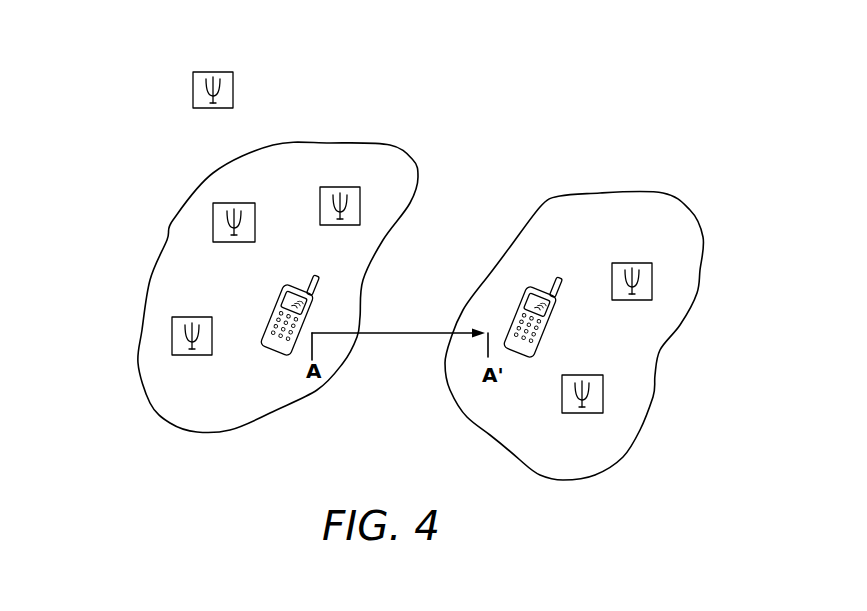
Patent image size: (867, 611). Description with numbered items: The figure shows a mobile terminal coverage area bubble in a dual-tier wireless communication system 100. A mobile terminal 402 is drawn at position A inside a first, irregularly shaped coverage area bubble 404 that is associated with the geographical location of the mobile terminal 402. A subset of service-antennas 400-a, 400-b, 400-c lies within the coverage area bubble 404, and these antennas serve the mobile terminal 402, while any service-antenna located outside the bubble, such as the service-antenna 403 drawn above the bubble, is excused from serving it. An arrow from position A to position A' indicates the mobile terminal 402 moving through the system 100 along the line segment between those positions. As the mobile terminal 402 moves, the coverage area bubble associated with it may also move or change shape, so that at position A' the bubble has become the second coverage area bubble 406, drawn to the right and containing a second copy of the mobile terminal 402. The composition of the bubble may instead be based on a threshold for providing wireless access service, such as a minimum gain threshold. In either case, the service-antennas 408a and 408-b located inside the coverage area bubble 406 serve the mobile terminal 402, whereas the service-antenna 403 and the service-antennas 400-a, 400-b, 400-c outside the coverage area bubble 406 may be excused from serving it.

The system 100 is at (494, 58).
The mobile terminal 402 is at (293, 283).
The service-antenna 403 is at (213, 70).
The coverage area bubble 404 is at (250, 420).
The coverage area bubble 406 is at (603, 193).
The service-antenna 400-a is at (172, 332).
The service-antenna 400-b is at (213, 223).
The service-antenna 400-c is at (340, 187).
The service-antenna 408a is at (633, 263).
The service-antenna 408-b is at (582, 417).